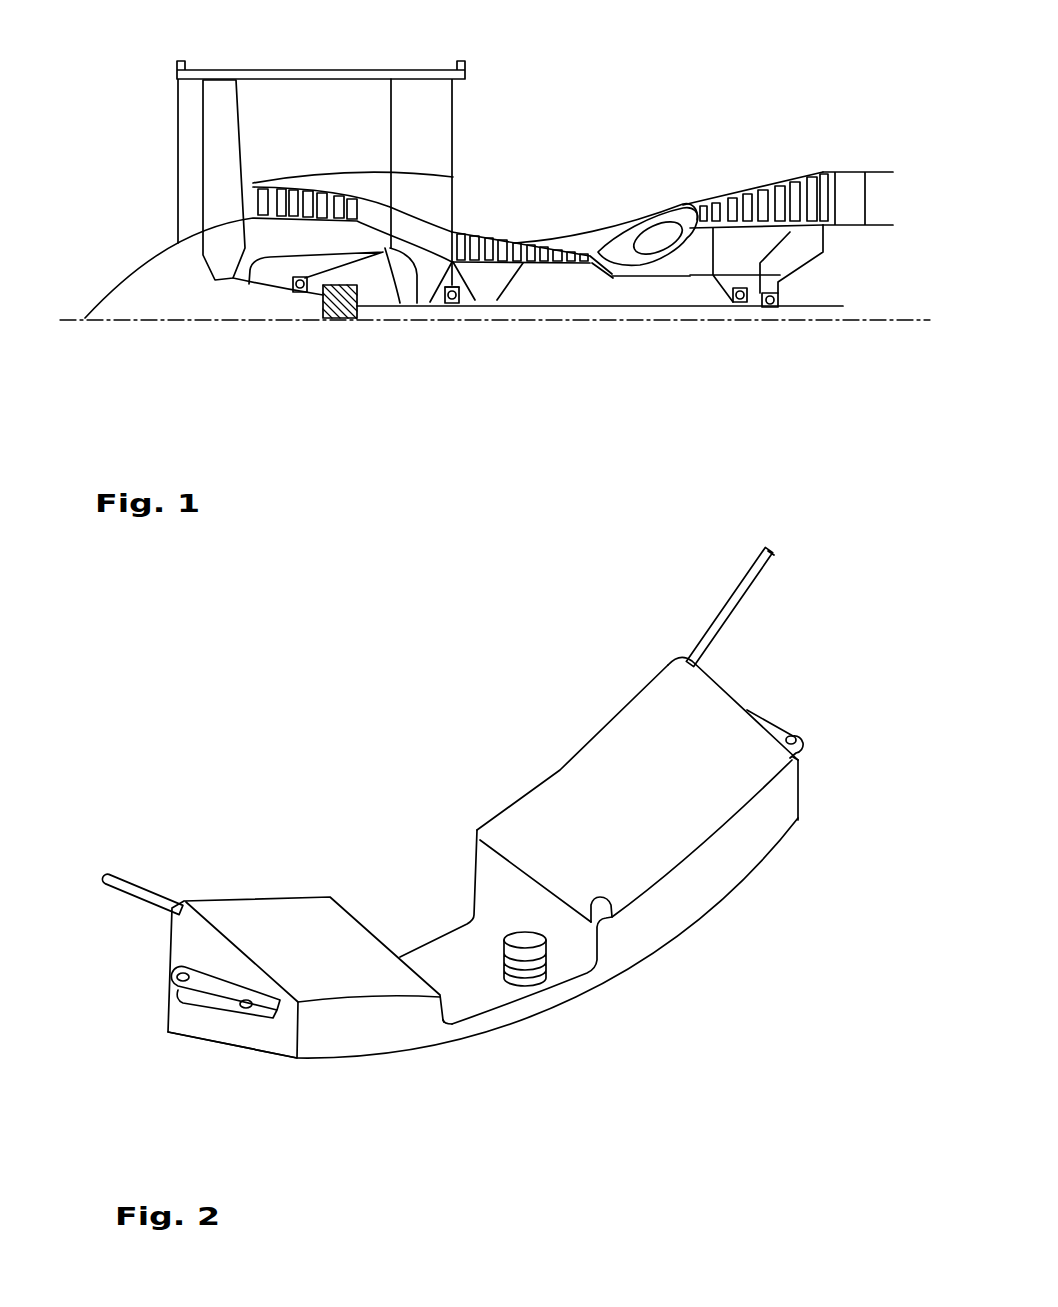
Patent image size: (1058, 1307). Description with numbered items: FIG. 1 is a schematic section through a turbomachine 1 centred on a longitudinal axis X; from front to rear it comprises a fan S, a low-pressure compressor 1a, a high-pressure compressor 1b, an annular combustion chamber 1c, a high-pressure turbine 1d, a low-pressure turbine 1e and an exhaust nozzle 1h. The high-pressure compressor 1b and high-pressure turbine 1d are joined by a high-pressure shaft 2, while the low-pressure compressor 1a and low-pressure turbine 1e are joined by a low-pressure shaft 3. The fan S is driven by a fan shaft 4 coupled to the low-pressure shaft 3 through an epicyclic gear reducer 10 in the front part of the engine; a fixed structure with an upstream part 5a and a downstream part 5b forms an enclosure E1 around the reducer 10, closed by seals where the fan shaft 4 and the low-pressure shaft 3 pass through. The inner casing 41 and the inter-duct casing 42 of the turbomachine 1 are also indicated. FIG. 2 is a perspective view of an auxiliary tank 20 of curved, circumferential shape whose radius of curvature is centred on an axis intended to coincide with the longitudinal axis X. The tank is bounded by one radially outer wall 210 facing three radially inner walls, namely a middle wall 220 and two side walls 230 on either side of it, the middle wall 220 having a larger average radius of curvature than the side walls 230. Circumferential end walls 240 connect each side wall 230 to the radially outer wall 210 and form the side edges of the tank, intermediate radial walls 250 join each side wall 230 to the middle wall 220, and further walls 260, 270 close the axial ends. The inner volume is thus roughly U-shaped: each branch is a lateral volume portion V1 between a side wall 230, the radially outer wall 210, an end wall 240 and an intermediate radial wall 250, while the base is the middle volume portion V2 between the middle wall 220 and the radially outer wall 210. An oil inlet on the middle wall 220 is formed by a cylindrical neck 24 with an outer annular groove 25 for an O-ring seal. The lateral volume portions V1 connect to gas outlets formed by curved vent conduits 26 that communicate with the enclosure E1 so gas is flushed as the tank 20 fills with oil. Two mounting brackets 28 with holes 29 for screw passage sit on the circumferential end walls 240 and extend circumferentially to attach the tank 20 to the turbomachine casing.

In FIG. 1, the turbomachine 1 is at (567, 152).
In FIG. 1, the fan S is at (223, 130).
In FIG. 1, the inner casing 41 is at (290, 223).
In FIG. 1, the inter-duct casing 42 is at (354, 185).
In FIG. 1, the low-pressure compressor 1a is at (278, 187).
In FIG. 1, the high-pressure compressor 1b is at (487, 240).
In FIG. 1, the annular combustion chamber 1c is at (652, 240).
In FIG. 1, the high-pressure turbine 1d is at (714, 245).
In FIG. 1, the low-pressure turbine 1e is at (822, 172).
In FIG. 1, the exhaust nozzle 1h is at (873, 195).
In FIG. 1, the high-pressure shaft 2 is at (640, 278).
In FIG. 1, the low-pressure shaft 3 is at (520, 312).
In FIG. 1, the fan shaft 4 is at (277, 294).
In FIG. 1, the upstream part 5a is at (249, 286).
In FIG. 1, the downstream part 5b is at (407, 274).
In FIG. 1, the epicyclic gear reducer 10 is at (337, 318).
In FIG. 1, the enclosure E1 is at (370, 279).
In FIG. 1, the longitudinal axis X is at (138, 322).
In FIG. 2, the auxiliary tank 20 is at (822, 594).
In FIG. 2, the cylindrical neck 24 is at (612, 925).
In FIG. 2, the outer annular groove 25 is at (523, 976).
In FIG. 2, the vent conduits 26 is at (142, 893).
In FIG. 2, the mounting brackets 28 is at (215, 990).
In FIG. 2, the holes 29 is at (178, 968).
In FIG. 2, the radially outer wall 210 is at (552, 1019).
In FIG. 2, the middle wall 220 is at (437, 951).
In FIG. 2, the side walls 230 is at (278, 926).
In FIG. 2, the circumferential end walls 240 is at (190, 1023).
In FIG. 2, the intermediate radial walls 250 is at (362, 911).
In FIG. 2, the axial end wall 260 is at (736, 855).
In FIG. 2, the axial end wall 270 is at (570, 751).
In FIG. 2, the lateral volume portions V1 is at (347, 1000).
In FIG. 2, the second face V2 is at (473, 990).